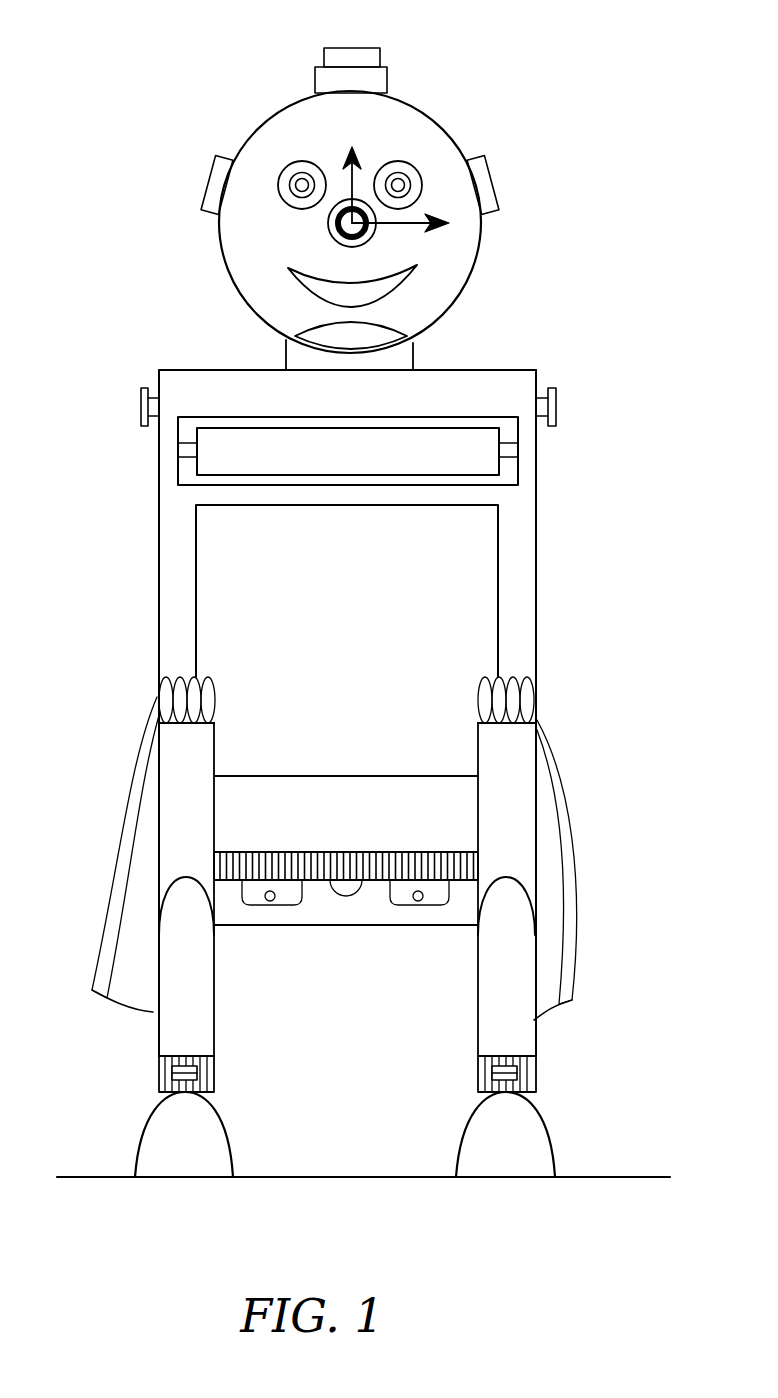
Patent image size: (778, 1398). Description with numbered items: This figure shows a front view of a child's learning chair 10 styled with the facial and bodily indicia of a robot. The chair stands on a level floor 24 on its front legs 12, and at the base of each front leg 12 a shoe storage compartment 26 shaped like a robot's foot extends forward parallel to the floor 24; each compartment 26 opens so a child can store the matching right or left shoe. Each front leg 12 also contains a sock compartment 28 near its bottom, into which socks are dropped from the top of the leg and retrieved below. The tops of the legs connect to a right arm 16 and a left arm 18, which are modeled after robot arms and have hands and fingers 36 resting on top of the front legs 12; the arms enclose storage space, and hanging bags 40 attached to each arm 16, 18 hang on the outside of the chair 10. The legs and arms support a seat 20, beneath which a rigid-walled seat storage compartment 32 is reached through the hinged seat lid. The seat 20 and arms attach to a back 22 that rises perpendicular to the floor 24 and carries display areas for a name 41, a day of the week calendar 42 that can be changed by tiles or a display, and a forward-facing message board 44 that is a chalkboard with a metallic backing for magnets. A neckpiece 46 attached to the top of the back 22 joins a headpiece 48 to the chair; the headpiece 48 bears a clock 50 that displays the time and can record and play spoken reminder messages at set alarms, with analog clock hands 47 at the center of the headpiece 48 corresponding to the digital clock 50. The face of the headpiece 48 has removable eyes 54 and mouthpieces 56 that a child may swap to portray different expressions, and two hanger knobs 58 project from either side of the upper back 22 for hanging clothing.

The learning chair 10 is at (220, 46).
The front legs 12 is at (173, 1012).
The right arm 16 is at (535, 720).
The left arm 18 is at (167, 722).
The seat 20 is at (377, 773).
The back 22 is at (522, 567).
The floor 24 is at (634, 1174).
The shoe storage compartments 26 is at (185, 1152).
The sock compartment 28 is at (215, 1073).
The seat storage compartment 32 is at (379, 910).
The hands and fingers 36 is at (170, 677).
The hanging bags 40 is at (115, 877).
The name display area 41 is at (515, 370).
The day of the week calendar 42 is at (447, 458).
The message board 44 is at (335, 648).
The neckpiece 46 is at (413, 352).
The analog clock hands 47 is at (352, 192).
The headpiece 48 is at (443, 123).
The clock 50 is at (280, 328).
The eyes 54 is at (285, 166).
The mouthpieces 56 is at (400, 268).
The hanger knobs 58 is at (140, 403).